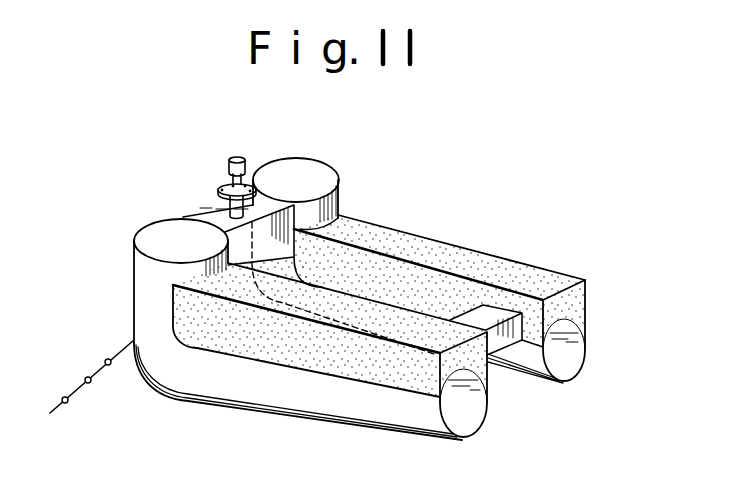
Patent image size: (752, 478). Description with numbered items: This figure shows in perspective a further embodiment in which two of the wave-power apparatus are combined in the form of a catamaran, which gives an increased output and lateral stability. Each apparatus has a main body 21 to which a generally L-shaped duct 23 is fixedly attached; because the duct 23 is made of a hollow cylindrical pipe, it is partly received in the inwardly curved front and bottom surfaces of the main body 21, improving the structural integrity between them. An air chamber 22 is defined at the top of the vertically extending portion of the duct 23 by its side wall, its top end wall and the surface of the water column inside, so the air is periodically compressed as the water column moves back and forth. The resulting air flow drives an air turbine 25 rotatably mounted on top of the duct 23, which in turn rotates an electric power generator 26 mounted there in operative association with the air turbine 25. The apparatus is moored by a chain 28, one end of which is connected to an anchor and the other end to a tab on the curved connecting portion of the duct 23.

The main body 21 is at (400, 311).
The air chamber 22 is at (287, 171).
The L-shaped duct 23 is at (513, 358).
The air turbine 25 is at (219, 190).
The electric power generator 26 is at (229, 163).
The chain 28 is at (97, 372).